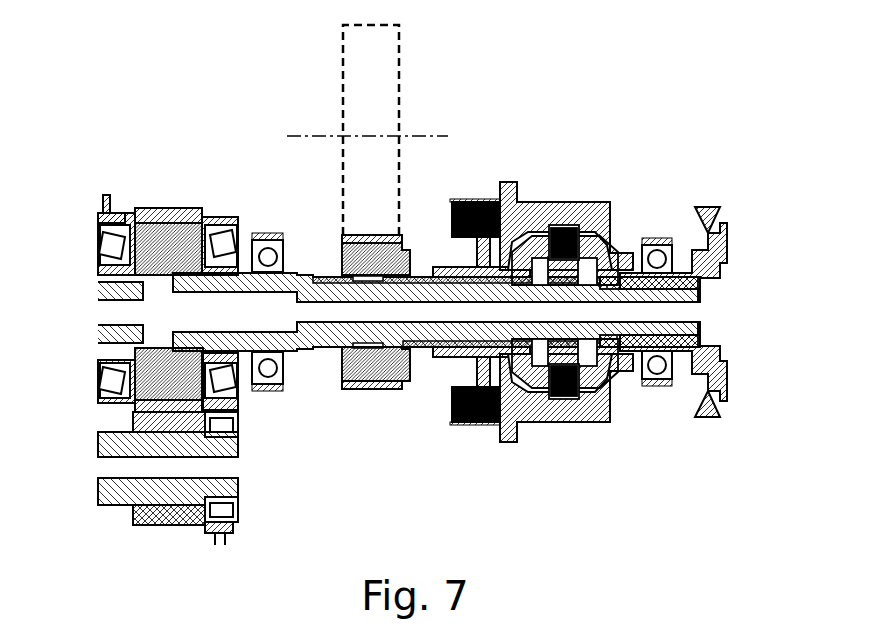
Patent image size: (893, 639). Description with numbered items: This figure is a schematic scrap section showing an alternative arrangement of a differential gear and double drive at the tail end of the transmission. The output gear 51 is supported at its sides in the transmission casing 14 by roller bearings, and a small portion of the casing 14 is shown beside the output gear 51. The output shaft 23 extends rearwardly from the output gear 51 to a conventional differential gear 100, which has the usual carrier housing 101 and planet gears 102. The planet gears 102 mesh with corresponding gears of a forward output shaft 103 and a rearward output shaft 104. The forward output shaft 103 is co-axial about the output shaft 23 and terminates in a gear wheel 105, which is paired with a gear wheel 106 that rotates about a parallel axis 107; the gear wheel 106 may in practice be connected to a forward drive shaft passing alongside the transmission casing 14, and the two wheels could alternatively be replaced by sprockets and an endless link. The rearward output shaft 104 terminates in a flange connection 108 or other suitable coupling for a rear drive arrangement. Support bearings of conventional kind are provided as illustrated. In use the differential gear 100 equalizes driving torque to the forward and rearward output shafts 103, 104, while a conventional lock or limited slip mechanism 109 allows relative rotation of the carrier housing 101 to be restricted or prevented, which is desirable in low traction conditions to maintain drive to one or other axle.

The casing 14 is at (104, 198).
The output gear 51 is at (172, 232).
The output shaft 23 is at (205, 342).
The differential gear 100 is at (517, 125).
The carrier housing 101 is at (592, 208).
The planet gears 102 is at (592, 242).
The forward output shaft 103 is at (425, 345).
The rearward output shaft 104 is at (650, 373).
The gear wheel 105 is at (365, 378).
The gear wheel 106 is at (383, 62).
The parallel axis 107 is at (291, 125).
The flange connection 108 is at (713, 253).
The lock or limited slip mechanism 109 is at (476, 440).